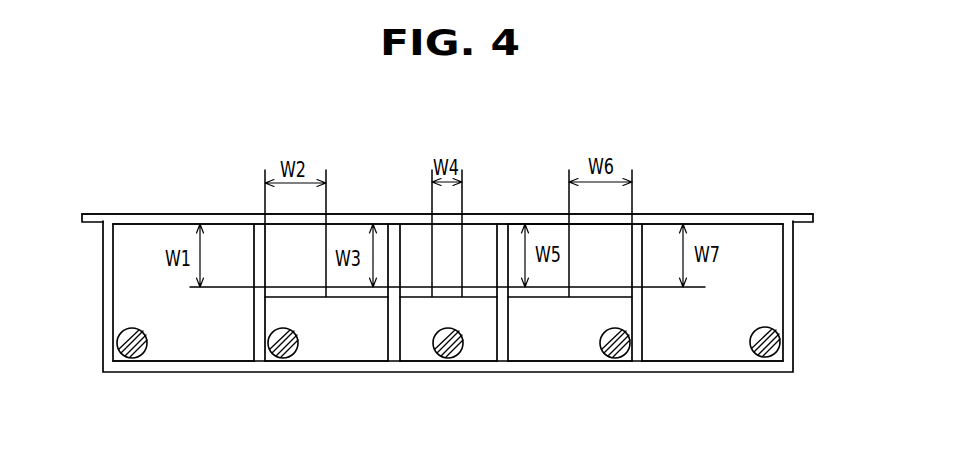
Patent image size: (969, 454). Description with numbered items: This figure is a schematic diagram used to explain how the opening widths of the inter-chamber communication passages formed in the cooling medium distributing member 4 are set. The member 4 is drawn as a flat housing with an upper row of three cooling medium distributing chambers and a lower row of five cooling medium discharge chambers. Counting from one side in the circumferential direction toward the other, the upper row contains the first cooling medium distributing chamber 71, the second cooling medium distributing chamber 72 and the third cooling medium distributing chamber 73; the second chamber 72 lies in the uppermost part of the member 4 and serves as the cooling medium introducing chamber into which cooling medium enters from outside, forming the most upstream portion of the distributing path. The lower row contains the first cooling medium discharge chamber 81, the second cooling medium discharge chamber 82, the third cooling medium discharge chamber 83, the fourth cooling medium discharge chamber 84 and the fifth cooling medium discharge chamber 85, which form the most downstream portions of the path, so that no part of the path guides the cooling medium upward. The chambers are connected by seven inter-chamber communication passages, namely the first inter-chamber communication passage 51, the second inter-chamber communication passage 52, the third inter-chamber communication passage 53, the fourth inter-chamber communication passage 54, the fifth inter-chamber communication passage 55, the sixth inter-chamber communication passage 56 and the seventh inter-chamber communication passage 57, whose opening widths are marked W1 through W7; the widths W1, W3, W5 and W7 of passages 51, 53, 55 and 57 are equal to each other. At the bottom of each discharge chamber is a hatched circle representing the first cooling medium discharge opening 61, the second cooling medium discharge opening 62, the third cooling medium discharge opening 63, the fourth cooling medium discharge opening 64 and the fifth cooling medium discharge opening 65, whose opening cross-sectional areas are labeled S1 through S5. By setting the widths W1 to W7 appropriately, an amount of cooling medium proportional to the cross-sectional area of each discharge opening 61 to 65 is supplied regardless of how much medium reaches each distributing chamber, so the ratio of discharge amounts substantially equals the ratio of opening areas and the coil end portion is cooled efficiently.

The cooling medium distributing member 4 is at (180, 150).
The first inter-chamber communication passage 51 is at (258, 245).
The second inter-chamber communication passage 52 is at (292, 297).
The third inter-chamber communication passage 53 is at (392, 226).
The fourth inter-chamber communication passage 54 is at (447, 289).
The fifth inter-chamber communication passage 55 is at (502, 223).
The sixth inter-chamber communication passage 56 is at (598, 288).
The seventh inter-chamber communication passage 57 is at (637, 238).
The first cooling medium discharge opening 61 is at (132, 350).
The second cooling medium discharge opening 62 is at (283, 350).
The third cooling medium discharge opening 63 is at (443, 350).
The fourth cooling medium discharge opening 64 is at (617, 350).
The fifth cooling medium discharge opening 65 is at (763, 349).
The first cooling medium distributing chamber 71 is at (345, 232).
The second cooling medium distributing chamber 72 is at (477, 233).
The third cooling medium distributing chamber 73 is at (552, 232).
The first cooling medium discharge chamber 81 is at (198, 345).
The second cooling medium discharge chamber 82 is at (340, 352).
The third cooling medium discharge chamber 83 is at (482, 350).
The fourth cooling medium discharge chamber 84 is at (558, 345).
The fifth cooling medium discharge chamber 85 is at (700, 350).